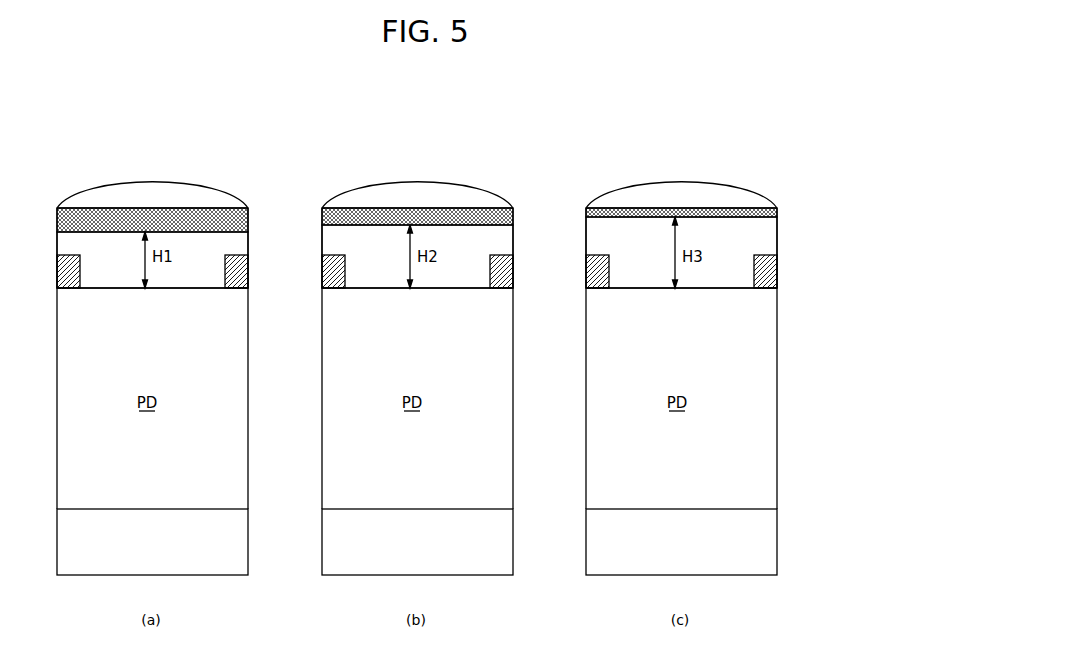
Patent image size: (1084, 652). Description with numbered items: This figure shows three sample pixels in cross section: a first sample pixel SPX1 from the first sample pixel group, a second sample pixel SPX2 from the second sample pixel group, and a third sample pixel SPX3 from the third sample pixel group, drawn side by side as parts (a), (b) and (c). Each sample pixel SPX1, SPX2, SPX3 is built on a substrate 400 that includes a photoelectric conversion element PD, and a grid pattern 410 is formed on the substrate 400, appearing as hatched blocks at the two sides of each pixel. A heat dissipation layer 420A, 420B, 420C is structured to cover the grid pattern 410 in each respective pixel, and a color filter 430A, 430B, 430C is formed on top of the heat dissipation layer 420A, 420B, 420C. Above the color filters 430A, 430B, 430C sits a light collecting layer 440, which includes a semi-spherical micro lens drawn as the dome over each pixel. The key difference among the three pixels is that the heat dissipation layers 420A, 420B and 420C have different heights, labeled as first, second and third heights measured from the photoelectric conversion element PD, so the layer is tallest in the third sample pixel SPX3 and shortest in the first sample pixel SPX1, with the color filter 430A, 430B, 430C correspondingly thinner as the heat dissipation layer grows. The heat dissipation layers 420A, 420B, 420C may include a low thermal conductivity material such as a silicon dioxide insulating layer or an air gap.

The substrate 400 is at (243, 540).
The grid pattern 410 is at (243, 272).
The heat dissipation layer 420A is at (238, 244).
The heat dissipation layer 420B is at (503, 244).
The heat dissipation layer 420C is at (767, 244).
The color filter 430A is at (248, 214).
The color filter 430B is at (513, 214).
The color filter 430C is at (777, 214).
The light collecting layer 440 is at (219, 196).
The first sample pixel SPX1 is at (175, 178).
The second sample pixel SPX2 is at (440, 178).
The third sample pixel SPX3 is at (705, 178).